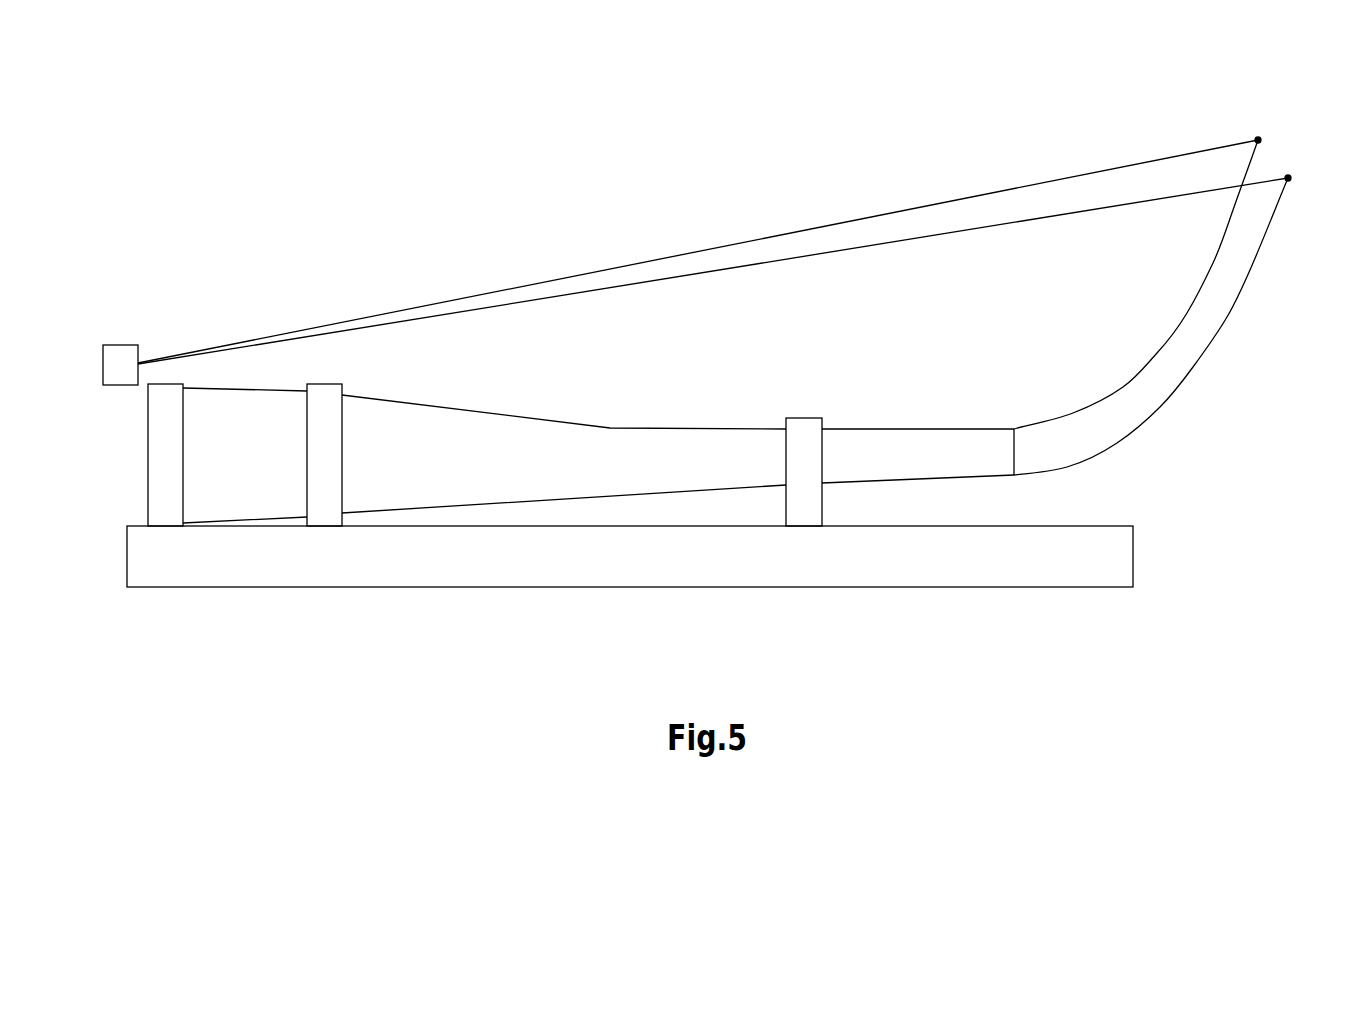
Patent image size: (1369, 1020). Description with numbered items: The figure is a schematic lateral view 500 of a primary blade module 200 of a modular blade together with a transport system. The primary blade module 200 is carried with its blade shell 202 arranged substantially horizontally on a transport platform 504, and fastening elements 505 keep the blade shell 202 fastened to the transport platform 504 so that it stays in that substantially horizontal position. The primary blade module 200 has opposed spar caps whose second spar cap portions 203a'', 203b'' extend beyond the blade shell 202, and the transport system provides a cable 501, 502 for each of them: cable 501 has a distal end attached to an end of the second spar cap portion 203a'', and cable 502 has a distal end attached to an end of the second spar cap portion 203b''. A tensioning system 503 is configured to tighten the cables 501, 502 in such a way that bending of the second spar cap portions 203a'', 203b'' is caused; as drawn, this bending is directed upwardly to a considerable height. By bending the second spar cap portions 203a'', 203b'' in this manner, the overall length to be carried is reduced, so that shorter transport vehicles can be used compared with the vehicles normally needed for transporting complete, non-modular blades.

The lateral view 500 is at (241, 152).
The cable 501 is at (822, 228).
The cable 502 is at (883, 247).
The tensioning system 503 is at (118, 352).
The transport platform 504 is at (452, 567).
The fastening elements 505 is at (164, 456).
The primary blade module 200 is at (765, 349).
The blade shell 202 is at (607, 452).
The second spar cap portion 203a'' is at (1136, 284).
The second spar cap portion 203b'' is at (1180, 326).